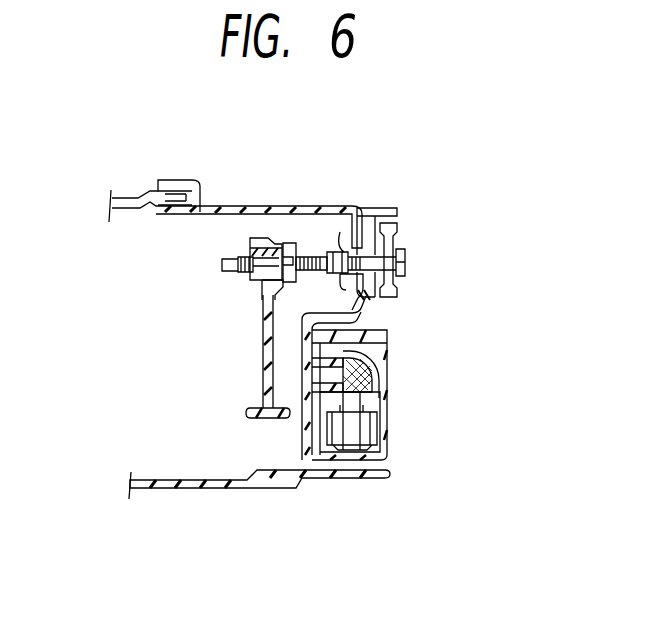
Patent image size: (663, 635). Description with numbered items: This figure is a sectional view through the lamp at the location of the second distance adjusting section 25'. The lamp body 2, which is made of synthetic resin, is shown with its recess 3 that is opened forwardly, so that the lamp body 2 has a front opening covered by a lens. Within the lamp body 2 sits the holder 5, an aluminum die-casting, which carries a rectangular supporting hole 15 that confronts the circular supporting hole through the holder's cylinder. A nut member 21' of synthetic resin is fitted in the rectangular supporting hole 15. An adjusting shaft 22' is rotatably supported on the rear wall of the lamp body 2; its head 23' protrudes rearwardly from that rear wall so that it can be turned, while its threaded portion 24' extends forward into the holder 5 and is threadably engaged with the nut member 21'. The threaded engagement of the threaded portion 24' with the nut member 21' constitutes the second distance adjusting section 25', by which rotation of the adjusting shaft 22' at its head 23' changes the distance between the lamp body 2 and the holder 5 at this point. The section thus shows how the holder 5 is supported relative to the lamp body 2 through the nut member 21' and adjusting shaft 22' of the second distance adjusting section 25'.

The lamp body 2 is at (239, 206).
The recess 3 is at (176, 481).
The holder 5 is at (263, 337).
The rectangular supporting hole 15 is at (289, 246).
The nut member 21' is at (224, 296).
The adjusting shaft 22' is at (393, 207).
The head 23' is at (447, 260).
The threaded portion 24' is at (408, 376).
The second distance adjusting section 25' is at (311, 189).